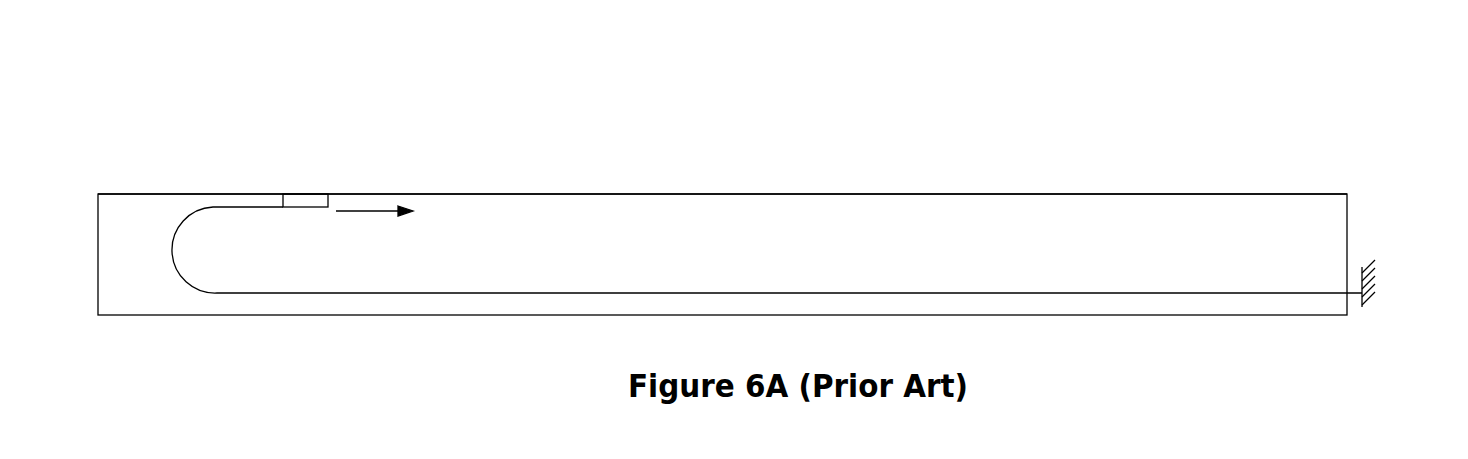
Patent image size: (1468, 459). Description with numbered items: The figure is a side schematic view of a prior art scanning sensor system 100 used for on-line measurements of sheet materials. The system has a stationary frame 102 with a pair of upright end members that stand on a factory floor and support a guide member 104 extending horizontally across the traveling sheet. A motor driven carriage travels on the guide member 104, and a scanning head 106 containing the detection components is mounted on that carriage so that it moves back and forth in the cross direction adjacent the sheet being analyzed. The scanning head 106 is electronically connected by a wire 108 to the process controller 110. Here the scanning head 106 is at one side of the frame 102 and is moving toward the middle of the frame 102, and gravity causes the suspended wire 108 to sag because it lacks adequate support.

The scanning sensor system 100 is at (954, 93).
The stationary frame 102 is at (397, 317).
The guide member 104 is at (785, 193).
The scanning head 106 is at (304, 192).
The wire 108 is at (192, 216).
The process controller 110 is at (1405, 260).